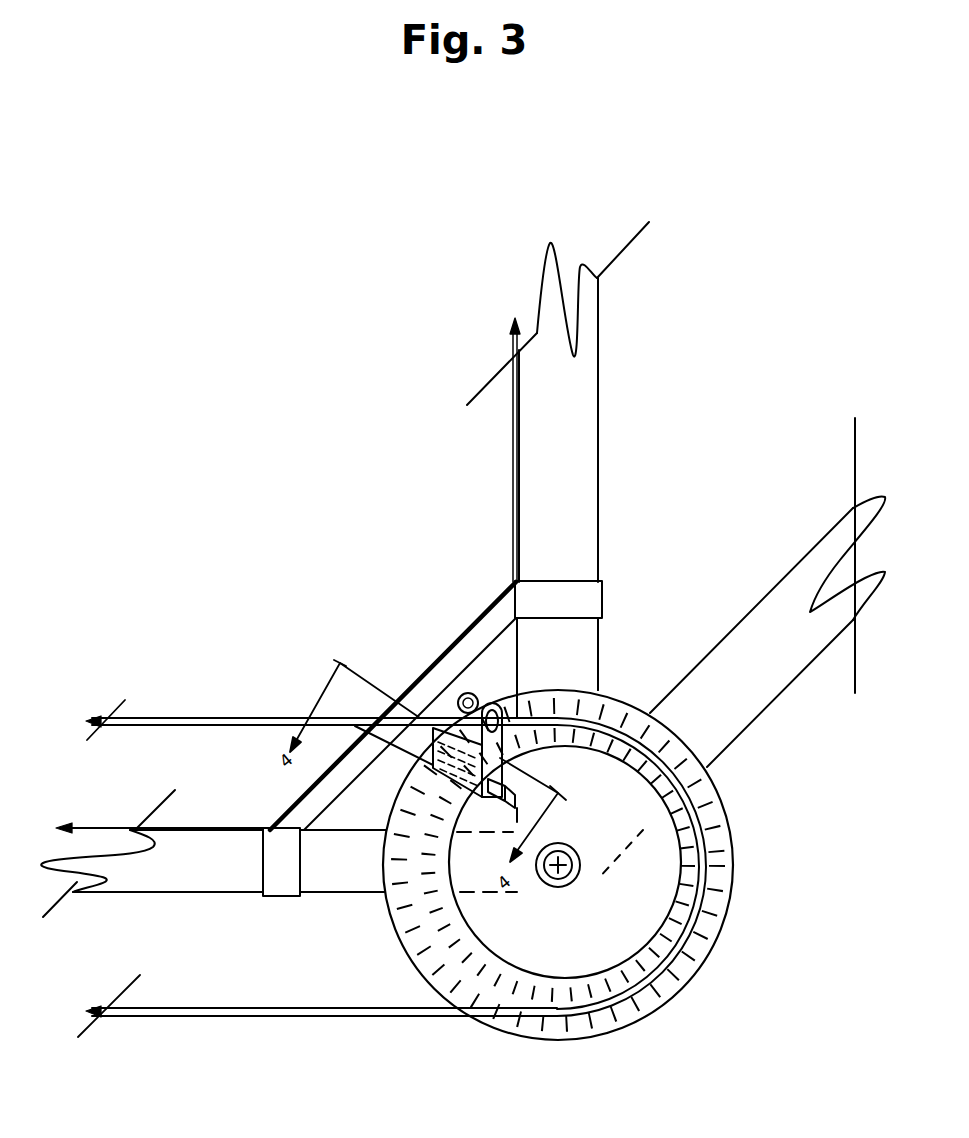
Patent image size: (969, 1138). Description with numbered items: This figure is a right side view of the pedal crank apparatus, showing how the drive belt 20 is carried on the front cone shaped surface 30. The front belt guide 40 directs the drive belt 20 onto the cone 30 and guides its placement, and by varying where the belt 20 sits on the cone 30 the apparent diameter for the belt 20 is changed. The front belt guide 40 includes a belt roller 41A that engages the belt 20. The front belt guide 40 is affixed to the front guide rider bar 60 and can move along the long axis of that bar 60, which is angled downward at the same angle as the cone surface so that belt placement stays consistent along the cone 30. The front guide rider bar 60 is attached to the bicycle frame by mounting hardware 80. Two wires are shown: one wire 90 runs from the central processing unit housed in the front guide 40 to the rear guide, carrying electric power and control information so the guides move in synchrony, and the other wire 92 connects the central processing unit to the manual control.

The drive belt 20 is at (235, 718).
The front cone shaped surface 30 is at (668, 872).
The front belt guide 40 is at (562, 720).
The belt roller 41A is at (477, 707).
The front guide rider bar 60 is at (420, 725).
The mounting hardware 80 is at (499, 613).
The wire 90 is at (205, 828).
The wire 92 is at (513, 477).